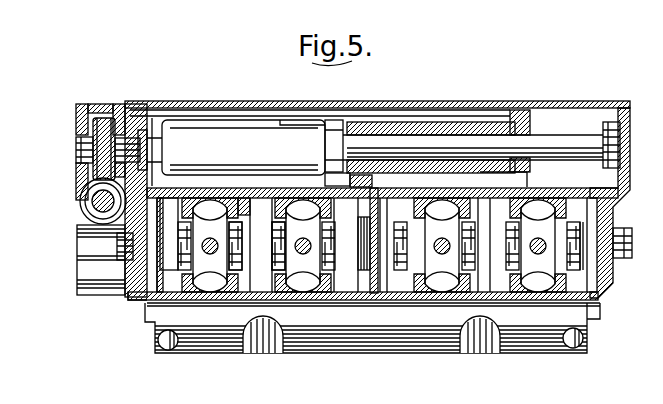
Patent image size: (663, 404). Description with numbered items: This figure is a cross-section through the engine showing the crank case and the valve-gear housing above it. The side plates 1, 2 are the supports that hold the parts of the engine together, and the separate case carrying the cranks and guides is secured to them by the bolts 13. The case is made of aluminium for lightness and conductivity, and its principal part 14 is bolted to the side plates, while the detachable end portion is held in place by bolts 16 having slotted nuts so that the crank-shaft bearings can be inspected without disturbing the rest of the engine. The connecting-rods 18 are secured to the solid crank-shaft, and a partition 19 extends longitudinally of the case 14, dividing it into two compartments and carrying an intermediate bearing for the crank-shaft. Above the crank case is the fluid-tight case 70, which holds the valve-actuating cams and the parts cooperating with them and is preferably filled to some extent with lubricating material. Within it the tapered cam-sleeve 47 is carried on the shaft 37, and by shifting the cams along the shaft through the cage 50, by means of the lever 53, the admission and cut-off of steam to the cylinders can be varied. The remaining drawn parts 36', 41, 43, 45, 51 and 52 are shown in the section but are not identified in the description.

The side plate 1 is at (140, 292).
The side plate 2 is at (613, 273).
The bolt 13 is at (117, 253).
The case part 14 is at (425, 340).
The bolt 16 is at (165, 351).
The connecting-rod 18 is at (283, 246).
The partition 19 is at (397, 292).
The dome boss 36' is at (372, 359).
The shaft 37 is at (76, 143).
The bracket 41 is at (84, 222).
The worm gear 43 is at (80, 164).
The worm 45 is at (95, 207).
The cam-sleeve 47 is at (210, 136).
The cage 50 is at (265, 119).
The collar 51 is at (518, 110).
The cover plate 52 is at (345, 110).
The lever 53 is at (360, 186).
The fluid-tight case 70 is at (580, 101).